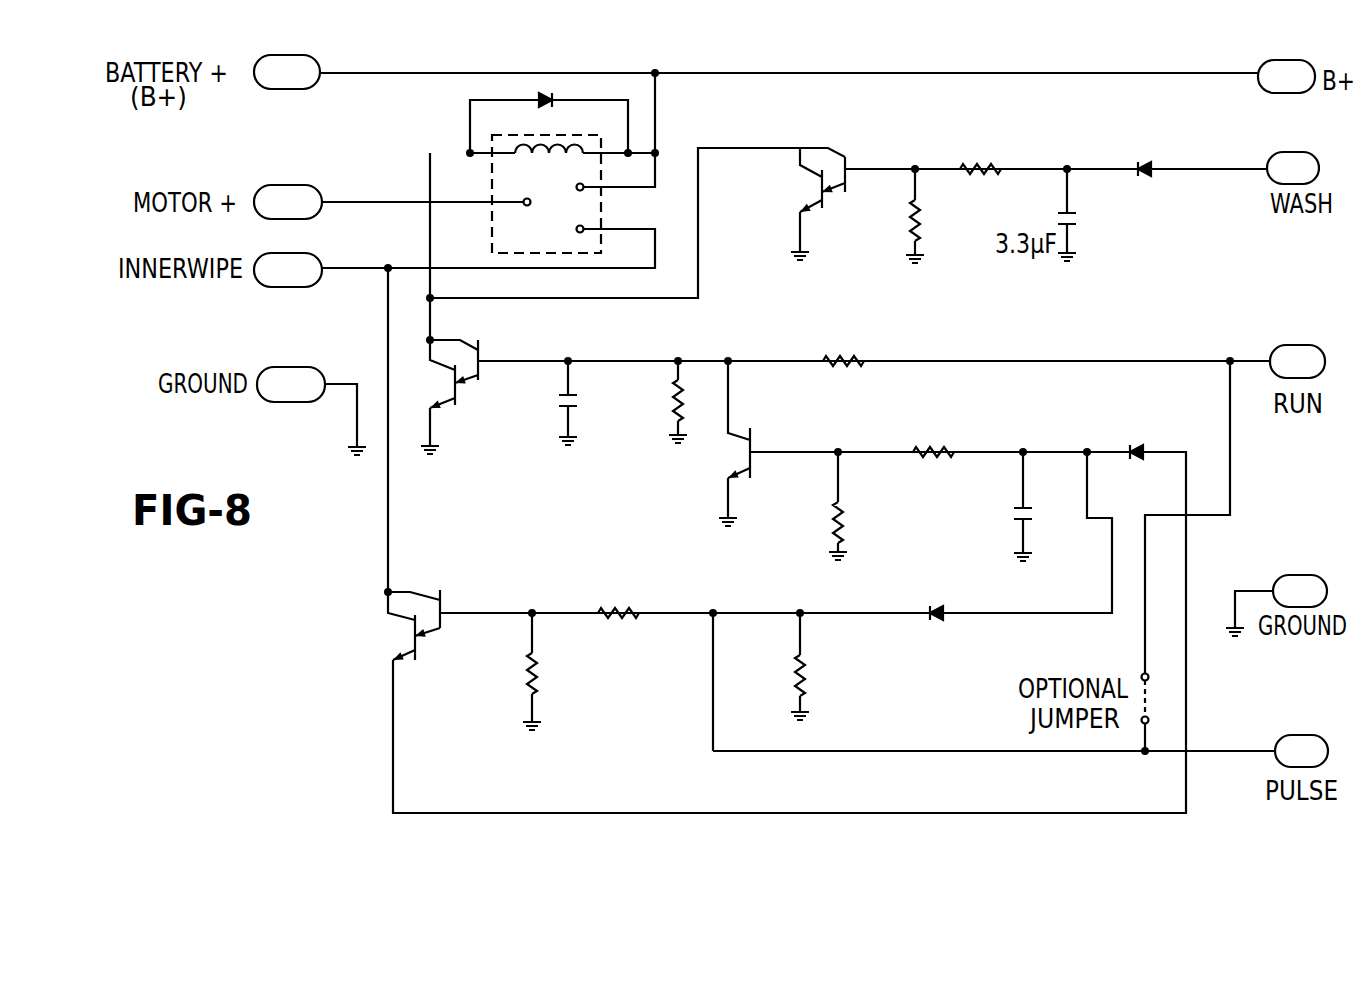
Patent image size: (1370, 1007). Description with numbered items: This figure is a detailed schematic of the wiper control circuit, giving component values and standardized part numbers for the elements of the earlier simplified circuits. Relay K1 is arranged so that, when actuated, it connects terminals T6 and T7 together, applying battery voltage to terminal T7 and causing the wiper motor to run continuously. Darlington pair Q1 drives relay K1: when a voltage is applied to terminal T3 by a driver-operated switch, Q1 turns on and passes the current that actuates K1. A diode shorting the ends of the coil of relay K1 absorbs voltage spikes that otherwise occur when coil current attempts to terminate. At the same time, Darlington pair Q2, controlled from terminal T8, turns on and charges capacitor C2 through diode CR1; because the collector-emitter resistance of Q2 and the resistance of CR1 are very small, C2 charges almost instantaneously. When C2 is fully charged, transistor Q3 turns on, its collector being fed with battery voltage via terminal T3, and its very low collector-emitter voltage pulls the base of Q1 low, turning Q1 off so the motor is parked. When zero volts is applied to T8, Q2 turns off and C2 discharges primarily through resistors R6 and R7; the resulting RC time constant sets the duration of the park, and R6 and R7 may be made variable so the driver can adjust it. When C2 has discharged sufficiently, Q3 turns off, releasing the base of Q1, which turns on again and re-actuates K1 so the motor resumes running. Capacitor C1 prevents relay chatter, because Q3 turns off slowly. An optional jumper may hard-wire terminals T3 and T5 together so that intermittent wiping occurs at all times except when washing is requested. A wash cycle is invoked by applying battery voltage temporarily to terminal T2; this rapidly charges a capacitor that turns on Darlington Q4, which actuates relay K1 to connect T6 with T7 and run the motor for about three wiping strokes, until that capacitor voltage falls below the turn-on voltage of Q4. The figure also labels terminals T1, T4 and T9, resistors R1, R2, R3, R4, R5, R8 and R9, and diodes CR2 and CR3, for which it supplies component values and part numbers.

The terminal T1 (B+) T1 is at (1286, 76).
The terminal T2 is at (1293, 168).
The terminal T3 is at (1297, 361).
The terminal T4 (ground) T4 is at (1300, 591).
The terminal T5 is at (1301, 751).
The terminal T6 is at (287, 72).
The terminal T7 is at (288, 202).
The terminal T8 is at (288, 270).
The terminal T9 (ground) T9 is at (291, 384).
The relay K1 is at (562, 173).
The Darlington pair Q1 is at (467, 378).
The Darlington pair Q2 is at (429, 616).
The transistor Q3 is at (765, 443).
The Darlington pair Q4 is at (819, 179).
The resistor R1 1.8M ohm R1 is at (841, 365).
The resistor R2 1.8M ohm R2 is at (641, 402).
The resistor R3 560K ohm R3 is at (627, 617).
The resistor R4 560K ohm R4 is at (491, 671).
The resistor R5 2.4K ohm R5 is at (843, 666).
The resistor R6 is at (933, 456).
The resistor R7 is at (799, 506).
The resistor R8 390 ohm R8 is at (981, 167).
The resistor R9 560 ohm R9 is at (883, 216).
The capacitor C1 is at (529, 403).
The capacitor C2 is at (1058, 509).
The diode CR1 is at (1135, 455).
The diode CR2 1N4004 CR2 is at (940, 615).
The diode CR3 1N4004 CR3 is at (1158, 172).